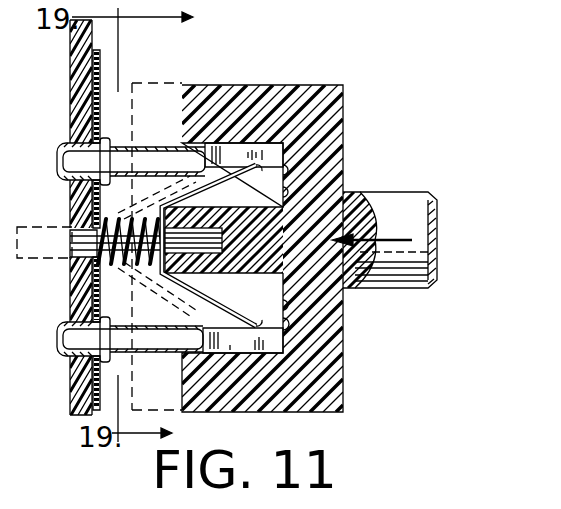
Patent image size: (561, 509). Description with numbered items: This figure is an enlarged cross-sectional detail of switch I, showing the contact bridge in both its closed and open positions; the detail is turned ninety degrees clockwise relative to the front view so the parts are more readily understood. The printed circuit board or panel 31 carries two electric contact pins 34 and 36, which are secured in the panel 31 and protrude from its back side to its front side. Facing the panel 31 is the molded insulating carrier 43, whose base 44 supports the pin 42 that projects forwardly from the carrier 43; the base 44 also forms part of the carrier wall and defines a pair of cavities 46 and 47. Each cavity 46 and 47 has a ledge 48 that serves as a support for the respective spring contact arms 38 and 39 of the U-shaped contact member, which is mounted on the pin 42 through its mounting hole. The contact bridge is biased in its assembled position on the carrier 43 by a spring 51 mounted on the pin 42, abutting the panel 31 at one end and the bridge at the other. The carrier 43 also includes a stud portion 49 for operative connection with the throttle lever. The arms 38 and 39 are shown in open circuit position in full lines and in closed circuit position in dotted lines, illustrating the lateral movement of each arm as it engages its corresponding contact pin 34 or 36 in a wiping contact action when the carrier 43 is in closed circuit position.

The panel 31 is at (80, 389).
The electric contact pin 34 is at (154, 334).
The electric contact pin 36 is at (149, 162).
The spring contact arm 38 is at (228, 302).
The spring contact arm 39 is at (220, 184).
The pin 42 is at (82, 240).
The molded insulating carrier 43 is at (350, 96).
The base 44 is at (282, 250).
The cavity 46 is at (289, 318).
The cavity 47 is at (345, 183).
The ledge 48 is at (272, 172).
The stud portion 49 is at (412, 286).
The spring 51 is at (68, 283).